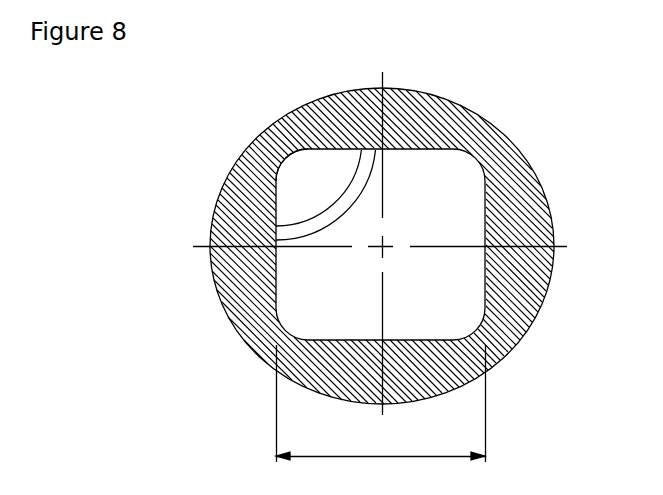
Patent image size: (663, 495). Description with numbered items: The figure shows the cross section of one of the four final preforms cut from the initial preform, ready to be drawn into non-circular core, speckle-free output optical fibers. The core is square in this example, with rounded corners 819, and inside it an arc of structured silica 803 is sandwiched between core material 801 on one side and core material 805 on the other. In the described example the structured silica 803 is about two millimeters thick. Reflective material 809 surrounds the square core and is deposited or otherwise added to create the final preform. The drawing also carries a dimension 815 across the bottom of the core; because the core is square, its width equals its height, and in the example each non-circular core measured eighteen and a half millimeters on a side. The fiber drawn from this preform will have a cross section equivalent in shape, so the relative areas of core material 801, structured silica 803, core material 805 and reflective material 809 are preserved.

The core material 801 is at (318, 188).
The arc of structured silica 803 is at (330, 218).
The core material 805 is at (380, 244).
The reflective material 809 is at (488, 157).
The cavity width dimension 815 is at (381, 403).
The rounded corners 819 is at (287, 157).